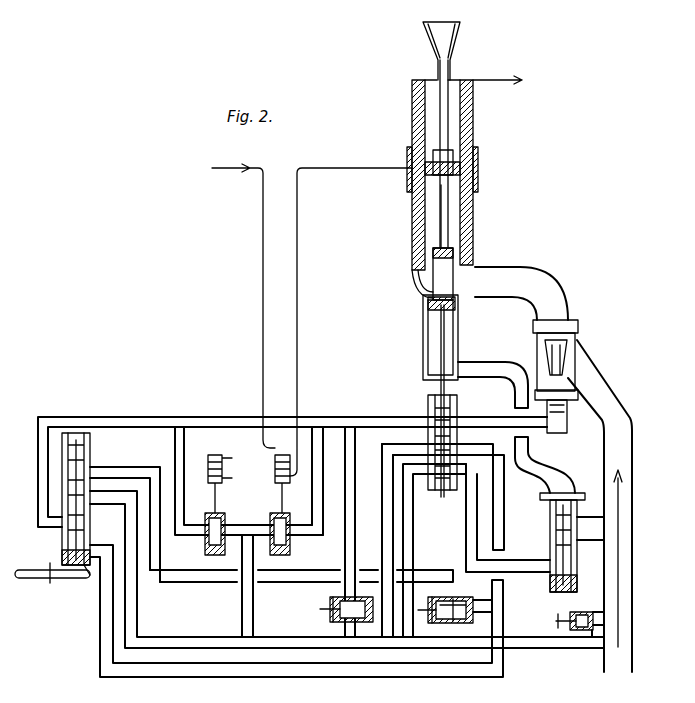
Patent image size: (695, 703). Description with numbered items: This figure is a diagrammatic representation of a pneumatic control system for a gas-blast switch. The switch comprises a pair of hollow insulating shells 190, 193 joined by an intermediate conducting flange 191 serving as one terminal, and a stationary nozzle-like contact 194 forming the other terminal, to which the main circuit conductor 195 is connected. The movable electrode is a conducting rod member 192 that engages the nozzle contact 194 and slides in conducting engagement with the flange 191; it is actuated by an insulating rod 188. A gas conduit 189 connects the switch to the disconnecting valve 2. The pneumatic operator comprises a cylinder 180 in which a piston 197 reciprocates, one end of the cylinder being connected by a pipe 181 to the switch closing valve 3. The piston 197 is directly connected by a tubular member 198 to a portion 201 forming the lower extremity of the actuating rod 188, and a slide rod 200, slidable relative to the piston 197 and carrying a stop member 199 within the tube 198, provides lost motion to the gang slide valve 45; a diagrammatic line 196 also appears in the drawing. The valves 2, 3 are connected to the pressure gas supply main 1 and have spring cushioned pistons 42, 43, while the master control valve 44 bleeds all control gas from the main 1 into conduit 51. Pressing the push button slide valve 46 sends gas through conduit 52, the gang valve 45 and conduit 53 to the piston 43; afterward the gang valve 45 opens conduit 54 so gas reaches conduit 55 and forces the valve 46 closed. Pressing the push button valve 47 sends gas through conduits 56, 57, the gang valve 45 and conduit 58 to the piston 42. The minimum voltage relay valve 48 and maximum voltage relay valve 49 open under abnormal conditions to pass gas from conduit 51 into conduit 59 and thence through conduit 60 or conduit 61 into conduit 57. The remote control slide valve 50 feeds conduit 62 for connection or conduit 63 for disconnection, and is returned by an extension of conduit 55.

The pressure gas supply main 1 is at (633, 552).
The disconnecting valve 2 is at (537, 352).
The connecting valve 3 is at (550, 510).
The piston 42 is at (567, 414).
The piston 43 is at (577, 572).
The master control valve 44 is at (583, 612).
The gang slide valve 45 is at (457, 405).
The push button slide valve 46 is at (430, 606).
The push button valve 47 is at (330, 618).
The minimum voltage relay valve 48 is at (232, 515).
The maximum voltage relay valve 49 is at (290, 522).
The remote control slide valve 50 is at (62, 556).
The conduit 51 is at (547, 648).
The conduit 52 is at (456, 597).
The conduit 53 is at (466, 527).
The conduit 54 is at (382, 530).
The conduit 55 is at (503, 600).
The conduit 56 is at (345, 553).
The conduit 57 is at (376, 417).
The conduit 58 is at (492, 417).
The conduit 59 is at (242, 614).
The conduit 60 is at (196, 446).
The conduit 61 is at (323, 492).
The conduit 62 is at (282, 582).
The conduit 63 is at (40, 458).
The cylinder 180 is at (423, 322).
The pipe 181 is at (565, 478).
The insulating rod 188 is at (448, 215).
The gas conduit 189 is at (537, 285).
The hollow insulating shell 190 is at (412, 214).
The intermediate conducting flange 191 is at (455, 160).
The conducting rod member 192 is at (443, 125).
The hollow insulating shell 193 is at (473, 112).
The nozzle-like contact 194 is at (452, 78).
The main circuit conductor 195 is at (514, 80).
The electric line 196 is at (297, 317).
The piston 197 is at (455, 305).
The tubular member 198 is at (428, 283).
The stop member 199 is at (428, 300).
The slide rod 200 is at (441, 352).
The portion of actuating rod 201 is at (433, 252).